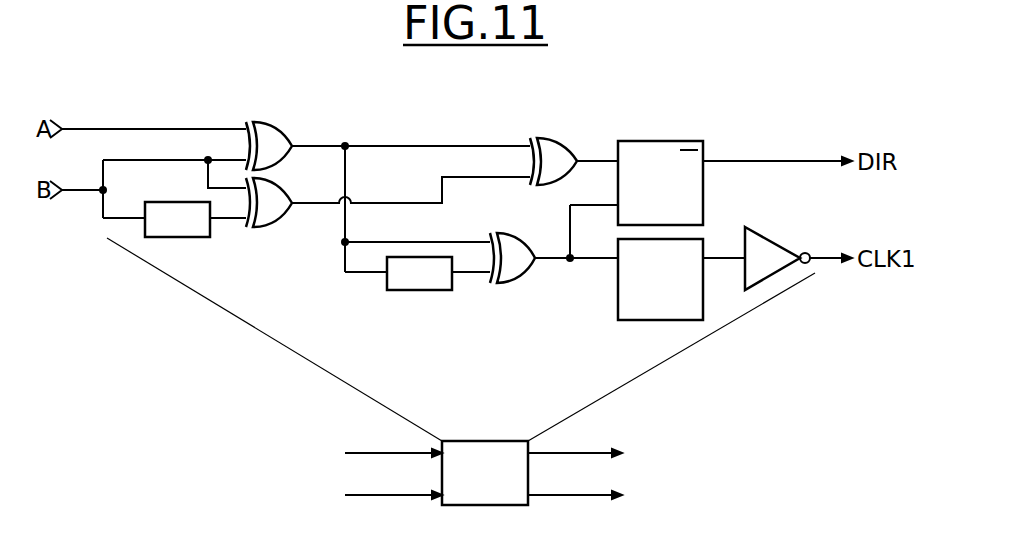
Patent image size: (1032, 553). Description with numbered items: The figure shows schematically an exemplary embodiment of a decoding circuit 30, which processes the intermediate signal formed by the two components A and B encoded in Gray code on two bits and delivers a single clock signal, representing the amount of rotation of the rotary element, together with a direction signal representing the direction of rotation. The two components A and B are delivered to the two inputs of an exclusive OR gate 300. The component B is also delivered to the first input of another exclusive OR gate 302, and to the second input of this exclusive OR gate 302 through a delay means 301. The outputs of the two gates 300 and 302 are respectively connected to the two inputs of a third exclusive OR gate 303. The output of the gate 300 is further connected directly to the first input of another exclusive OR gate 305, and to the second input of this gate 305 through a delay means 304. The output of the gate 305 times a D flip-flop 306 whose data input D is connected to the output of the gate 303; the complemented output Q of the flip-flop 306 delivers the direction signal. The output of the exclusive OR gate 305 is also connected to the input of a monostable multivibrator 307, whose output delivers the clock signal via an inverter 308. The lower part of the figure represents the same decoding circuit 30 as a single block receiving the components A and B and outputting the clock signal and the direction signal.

The decoding circuit 30 is at (506, 474).
The exclusive OR gate 300 is at (270, 120).
The delay means 301 is at (177, 219).
The exclusive OR gate 302 is at (272, 232).
The third exclusive OR gate 303 is at (554, 135).
The delay means 304 is at (419, 273).
The exclusive OR gate 305 is at (515, 286).
The D flip-flop 306 is at (660, 140).
The monostable multivibrator 307 is at (617, 302).
The inverter 308 is at (769, 236).